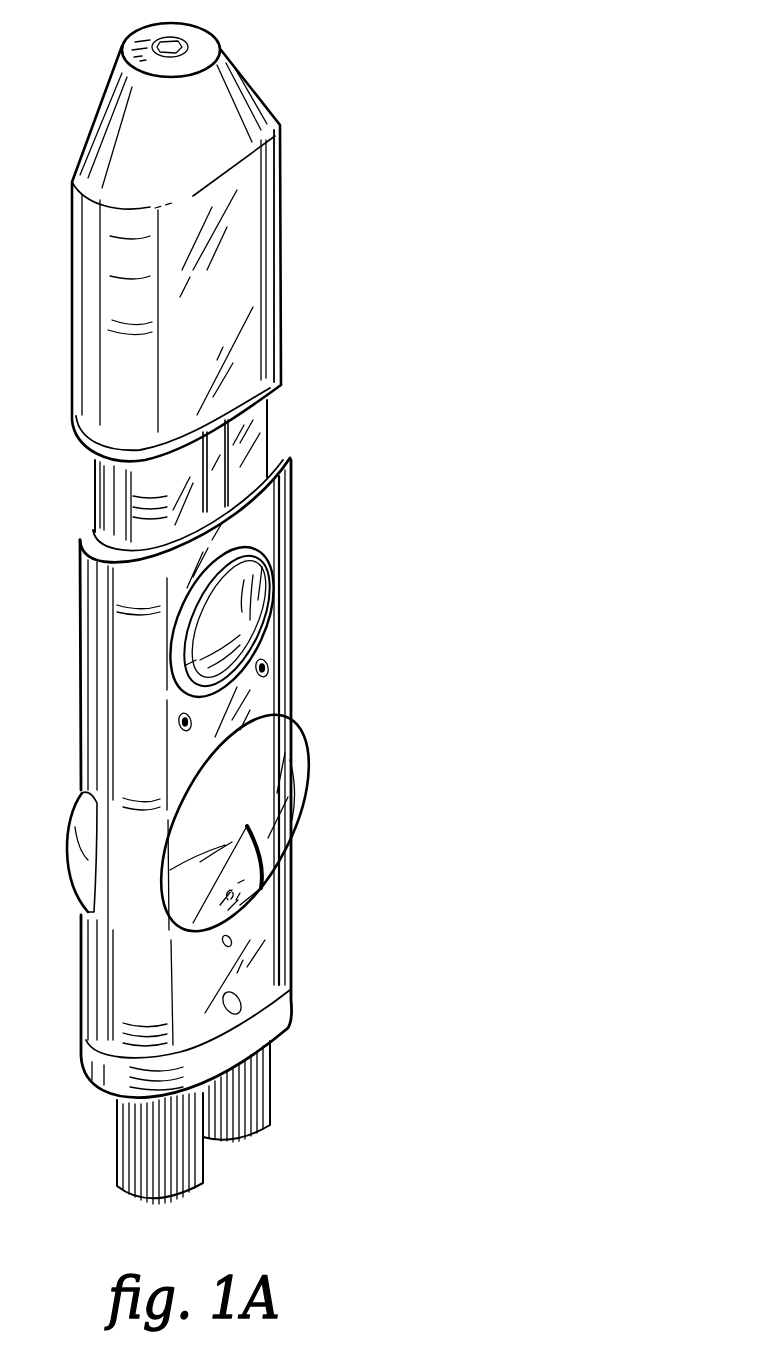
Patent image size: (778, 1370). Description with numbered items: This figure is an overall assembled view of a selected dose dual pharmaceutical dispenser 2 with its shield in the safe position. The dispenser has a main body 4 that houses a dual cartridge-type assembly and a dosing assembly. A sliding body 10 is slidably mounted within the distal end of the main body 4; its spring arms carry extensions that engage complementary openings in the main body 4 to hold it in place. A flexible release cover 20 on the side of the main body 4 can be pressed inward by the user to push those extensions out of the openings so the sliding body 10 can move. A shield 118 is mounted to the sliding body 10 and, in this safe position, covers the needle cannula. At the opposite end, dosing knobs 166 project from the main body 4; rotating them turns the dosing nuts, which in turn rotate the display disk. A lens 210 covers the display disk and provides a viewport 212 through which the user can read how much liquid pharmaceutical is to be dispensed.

The selected dose dual pharmaceutical dispenser 2 is at (322, 166).
The shield 118 is at (281, 231).
The sliding body 10 is at (274, 438).
The main body 4 is at (291, 517).
The release cover 20 is at (266, 591).
The lens 210 is at (291, 773).
The viewport 212 is at (249, 896).
The dosing knobs 166 is at (271, 1084).